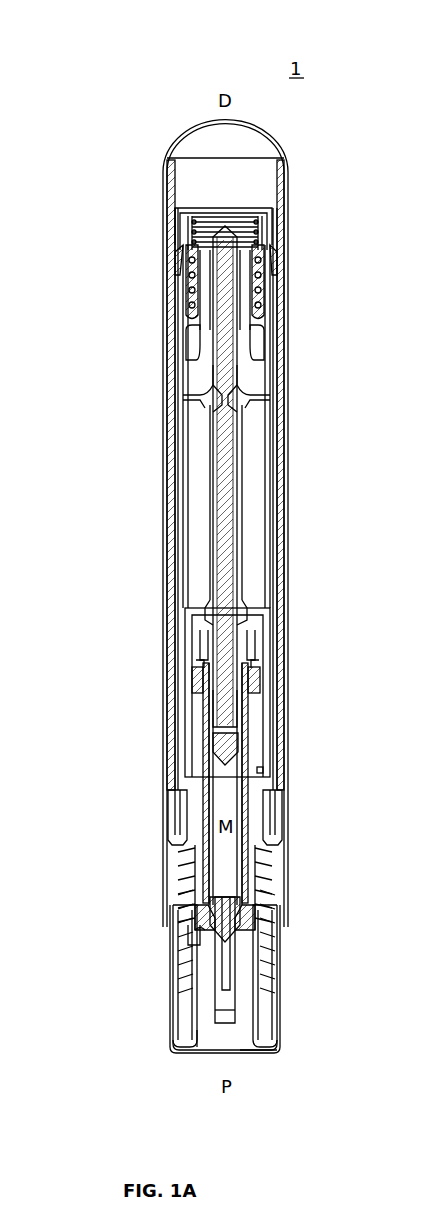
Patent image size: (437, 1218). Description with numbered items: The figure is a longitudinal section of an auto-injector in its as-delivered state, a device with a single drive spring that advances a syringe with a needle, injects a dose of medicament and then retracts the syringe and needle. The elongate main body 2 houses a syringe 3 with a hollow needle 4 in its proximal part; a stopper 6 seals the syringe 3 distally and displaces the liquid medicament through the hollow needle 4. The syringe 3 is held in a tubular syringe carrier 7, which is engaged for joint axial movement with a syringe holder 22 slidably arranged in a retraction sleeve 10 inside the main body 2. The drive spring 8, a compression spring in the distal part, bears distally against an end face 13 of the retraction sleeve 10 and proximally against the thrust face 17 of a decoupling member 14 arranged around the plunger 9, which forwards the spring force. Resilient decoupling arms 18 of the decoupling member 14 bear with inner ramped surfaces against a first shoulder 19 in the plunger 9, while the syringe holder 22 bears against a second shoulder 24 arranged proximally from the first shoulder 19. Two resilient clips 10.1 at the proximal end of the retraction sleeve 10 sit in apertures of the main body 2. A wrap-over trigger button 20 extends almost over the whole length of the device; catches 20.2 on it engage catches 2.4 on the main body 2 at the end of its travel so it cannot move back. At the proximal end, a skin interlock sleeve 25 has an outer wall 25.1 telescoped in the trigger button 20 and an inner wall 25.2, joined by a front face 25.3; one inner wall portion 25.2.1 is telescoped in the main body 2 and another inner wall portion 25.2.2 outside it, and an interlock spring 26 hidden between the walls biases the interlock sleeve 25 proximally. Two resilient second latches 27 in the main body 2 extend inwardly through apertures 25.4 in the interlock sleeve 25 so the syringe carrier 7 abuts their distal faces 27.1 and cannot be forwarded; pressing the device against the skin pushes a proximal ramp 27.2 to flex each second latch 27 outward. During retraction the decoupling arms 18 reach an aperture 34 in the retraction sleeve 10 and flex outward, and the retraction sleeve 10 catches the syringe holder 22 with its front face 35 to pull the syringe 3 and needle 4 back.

The main body 2 is at (272, 682).
The catches 2.4 is at (177, 268).
The syringe 3 is at (210, 735).
The hollow needle 4 is at (237, 975).
The stopper 6 is at (232, 740).
The syringe carrier 7 is at (207, 775).
The drive spring 8 is at (270, 226).
The plunger 9 is at (230, 452).
The retraction sleeve 10 is at (185, 492).
The resilient clips 10.1 is at (188, 833).
The end face 13 is at (192, 215).
The decoupling member 14 is at (200, 350).
The thrust face 17 is at (262, 320).
The resilient decoupling arms 18 is at (186, 395).
The first shoulder 19 is at (205, 408).
The trigger button 20 is at (172, 130).
The catches 20.2 is at (172, 240).
The syringe holder 22 is at (190, 680).
The second shoulder 24 is at (235, 600).
The skin interlock sleeve 25 is at (168, 1050).
The outer wall 25.1 is at (190, 993).
The inner wall 25.2 is at (205, 1040).
The inner wall portion 25.2.1 is at (252, 1003).
The inner wall portion 25.2.2 is at (225, 1010).
The front face 25.3 is at (283, 1050).
The apertures 25.4 is at (195, 935).
The interlock spring 26 is at (270, 955).
The second latches 27 is at (200, 905).
The distal faces 27.1 is at (190, 885).
The proximal ramp 27.2 is at (185, 945).
The aperture 34 is at (268, 628).
The front face 35 is at (262, 775).